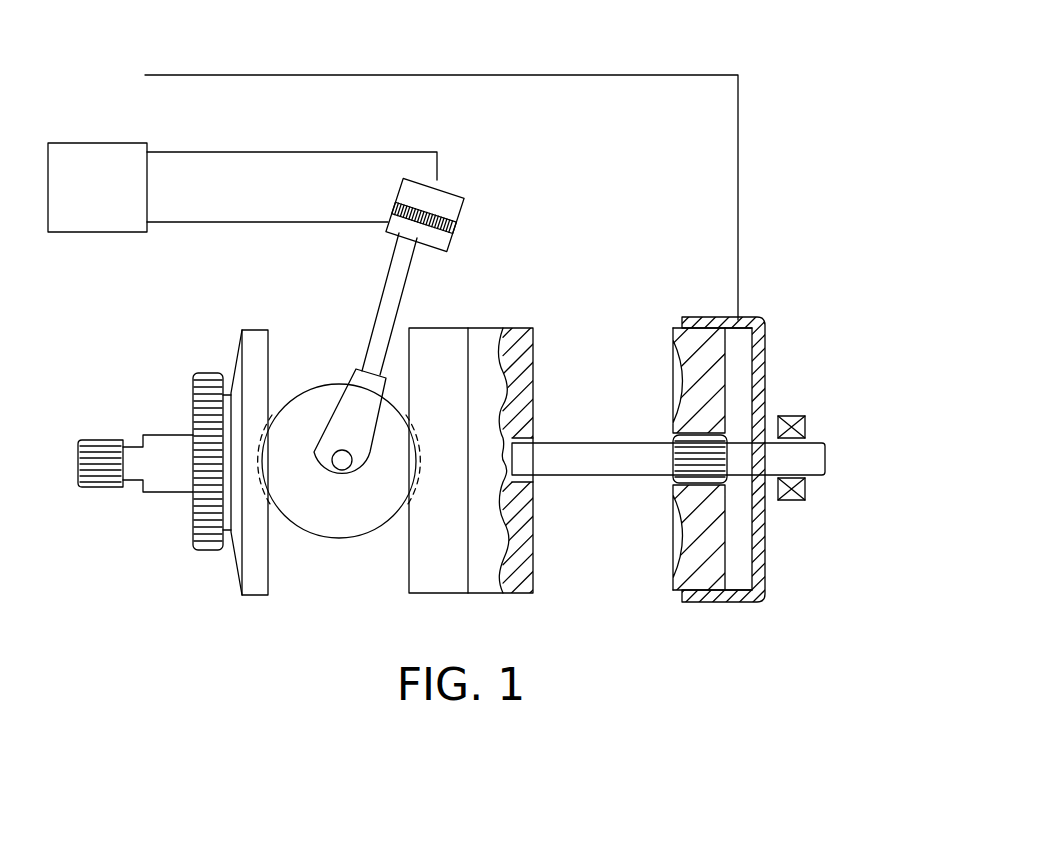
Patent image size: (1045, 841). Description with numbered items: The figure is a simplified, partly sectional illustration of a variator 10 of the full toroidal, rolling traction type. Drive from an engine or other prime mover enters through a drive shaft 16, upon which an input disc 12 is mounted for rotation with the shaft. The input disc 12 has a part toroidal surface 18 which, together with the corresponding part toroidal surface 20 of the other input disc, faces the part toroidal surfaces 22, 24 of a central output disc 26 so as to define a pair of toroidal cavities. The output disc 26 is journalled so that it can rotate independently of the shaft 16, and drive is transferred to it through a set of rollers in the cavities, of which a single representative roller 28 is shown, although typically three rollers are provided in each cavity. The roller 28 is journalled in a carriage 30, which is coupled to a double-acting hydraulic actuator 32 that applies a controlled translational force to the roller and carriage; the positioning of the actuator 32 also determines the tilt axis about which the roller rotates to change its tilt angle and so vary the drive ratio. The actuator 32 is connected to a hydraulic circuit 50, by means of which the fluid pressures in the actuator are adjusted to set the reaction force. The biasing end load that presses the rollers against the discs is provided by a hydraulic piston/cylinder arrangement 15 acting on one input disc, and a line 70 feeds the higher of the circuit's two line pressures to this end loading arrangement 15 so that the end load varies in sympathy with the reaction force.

The variator 10 is at (457, 385).
The input disc 12 is at (251, 338).
The hydraulic piston/cylinder arrangement 15 is at (729, 454).
The drive shaft 16 is at (160, 490).
The part toroidal surface 18 is at (270, 372).
The part toroidal surface 20 is at (680, 368).
The part toroidal surface 22 is at (468, 493).
The part toroidal surface 24 is at (520, 535).
The central output disc 26 is at (449, 377).
The roller 28 is at (352, 532).
The carriage 30 is at (360, 381).
The double-acting hydraulic actuator 32 is at (479, 184).
The hydraulic circuit 50 is at (110, 201).
The line 70 is at (622, 75).